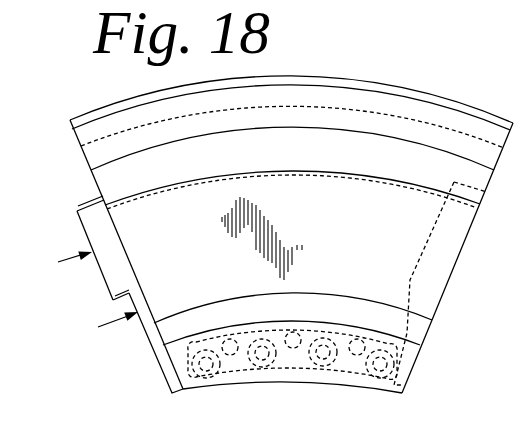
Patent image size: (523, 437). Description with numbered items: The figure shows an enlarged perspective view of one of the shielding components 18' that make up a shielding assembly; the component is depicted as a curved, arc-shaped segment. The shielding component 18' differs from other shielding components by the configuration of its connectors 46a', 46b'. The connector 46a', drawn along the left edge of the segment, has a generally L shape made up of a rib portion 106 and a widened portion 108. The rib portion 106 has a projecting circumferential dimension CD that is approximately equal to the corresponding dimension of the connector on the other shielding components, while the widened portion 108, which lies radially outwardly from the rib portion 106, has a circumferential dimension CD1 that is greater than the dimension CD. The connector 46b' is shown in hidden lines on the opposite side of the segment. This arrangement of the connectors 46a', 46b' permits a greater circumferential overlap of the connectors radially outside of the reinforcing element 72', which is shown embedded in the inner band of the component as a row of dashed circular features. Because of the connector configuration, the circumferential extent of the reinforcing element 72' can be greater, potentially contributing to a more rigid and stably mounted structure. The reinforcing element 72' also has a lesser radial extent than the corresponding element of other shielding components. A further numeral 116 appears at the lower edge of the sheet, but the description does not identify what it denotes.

The shielding component 18' is at (291, 199).
The widened portion 108 is at (98, 223).
The rib portion 106 is at (165, 350).
The connector 46a' is at (84, 303).
The connector 46b' is at (444, 283).
The reinforcing element 72' is at (292, 299).
The inner surface 116 is at (331, 365).
The circumferential dimension CD1 is at (130, 232).
The circumferential dimension CD is at (160, 304).